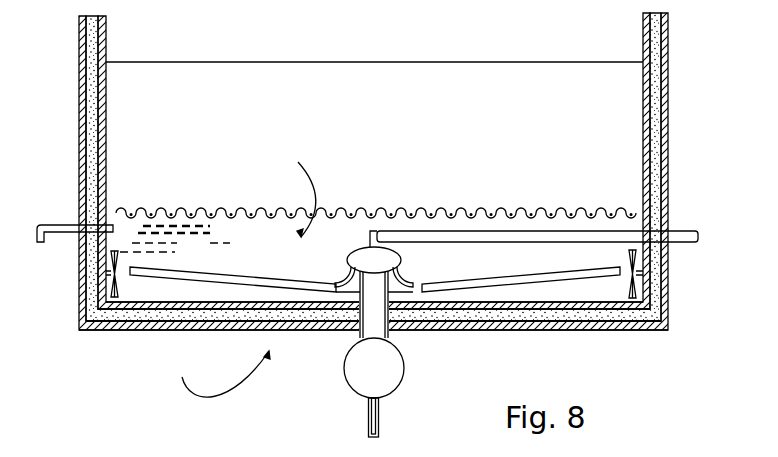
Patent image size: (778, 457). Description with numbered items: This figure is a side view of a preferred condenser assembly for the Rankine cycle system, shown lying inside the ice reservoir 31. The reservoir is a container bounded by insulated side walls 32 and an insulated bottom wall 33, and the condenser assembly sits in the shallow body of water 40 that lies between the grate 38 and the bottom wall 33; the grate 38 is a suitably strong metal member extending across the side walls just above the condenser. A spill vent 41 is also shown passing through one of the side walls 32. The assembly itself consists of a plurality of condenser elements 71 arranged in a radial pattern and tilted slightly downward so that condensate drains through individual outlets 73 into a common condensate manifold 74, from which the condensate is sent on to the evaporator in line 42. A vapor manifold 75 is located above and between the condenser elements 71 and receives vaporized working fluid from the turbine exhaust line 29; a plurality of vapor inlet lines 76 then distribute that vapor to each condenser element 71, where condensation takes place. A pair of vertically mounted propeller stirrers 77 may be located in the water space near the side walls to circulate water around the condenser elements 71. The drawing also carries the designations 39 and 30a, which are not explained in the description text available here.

The turbine exhaust line 29 is at (679, 231).
The flow direction arrow 30a is at (297, 199).
The ice reservoir 31 is at (226, 374).
The insulated side walls 32 is at (643, 135).
The insulated bottom wall 33 is at (513, 322).
The grate 38 is at (173, 210).
The liquid bath 39 is at (386, 126).
The shallow body of water 40 is at (208, 252).
The spill vent 41 is at (57, 225).
The line 42 is at (379, 420).
The condenser elements 71 is at (252, 276).
The individual outlets 73 is at (358, 334).
The condensate manifold 74 is at (352, 374).
The vapor manifold 75 is at (361, 256).
The vapor inlet lines 76 is at (347, 281).
The propeller stirrers 77 is at (114, 297).